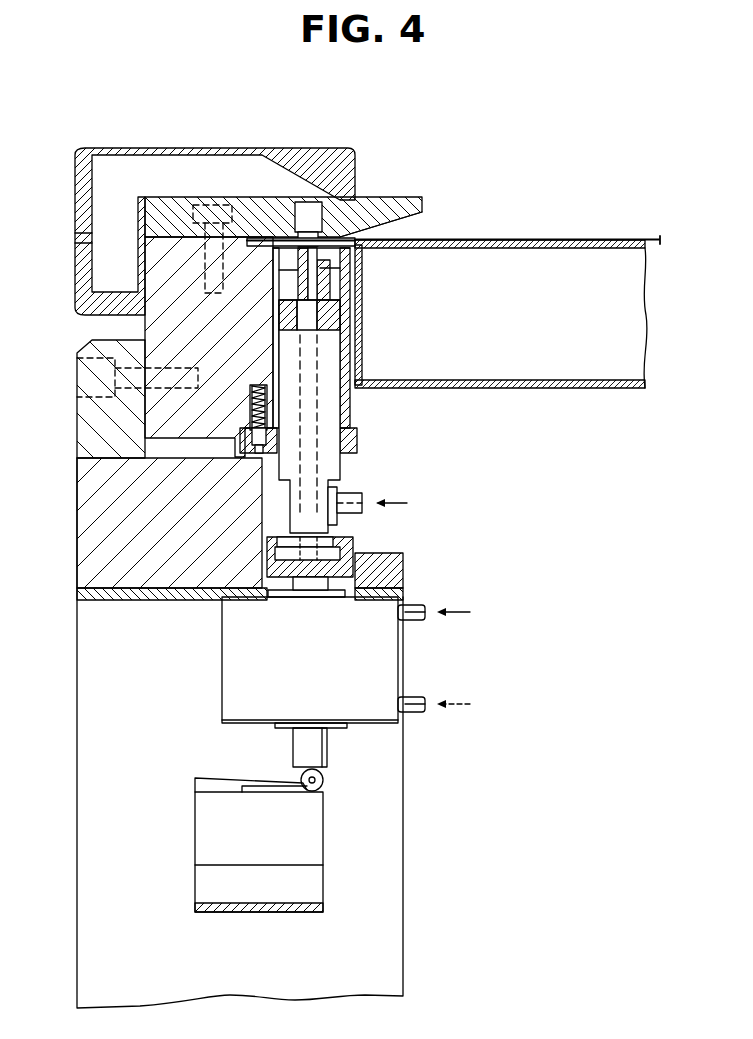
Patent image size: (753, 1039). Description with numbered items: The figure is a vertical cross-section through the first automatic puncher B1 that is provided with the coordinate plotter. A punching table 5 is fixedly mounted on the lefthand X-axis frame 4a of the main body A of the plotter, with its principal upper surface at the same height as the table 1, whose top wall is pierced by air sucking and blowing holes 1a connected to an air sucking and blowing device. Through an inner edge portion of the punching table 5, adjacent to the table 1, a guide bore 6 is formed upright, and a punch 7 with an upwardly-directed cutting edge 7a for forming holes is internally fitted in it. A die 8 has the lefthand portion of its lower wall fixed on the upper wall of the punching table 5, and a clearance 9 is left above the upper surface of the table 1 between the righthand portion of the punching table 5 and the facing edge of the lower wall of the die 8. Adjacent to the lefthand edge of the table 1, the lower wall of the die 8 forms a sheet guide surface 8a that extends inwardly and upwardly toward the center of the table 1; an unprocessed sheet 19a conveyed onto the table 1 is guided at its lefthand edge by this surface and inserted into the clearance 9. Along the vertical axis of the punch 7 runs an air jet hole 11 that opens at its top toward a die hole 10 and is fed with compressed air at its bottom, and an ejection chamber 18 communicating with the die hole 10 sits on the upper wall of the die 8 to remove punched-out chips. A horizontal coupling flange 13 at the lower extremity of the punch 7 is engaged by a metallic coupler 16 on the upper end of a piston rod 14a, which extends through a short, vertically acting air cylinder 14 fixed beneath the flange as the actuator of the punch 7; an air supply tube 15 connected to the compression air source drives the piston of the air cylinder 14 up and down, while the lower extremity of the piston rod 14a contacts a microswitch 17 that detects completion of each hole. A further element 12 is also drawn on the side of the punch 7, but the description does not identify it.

The first automatic puncher B1 is at (162, 110).
The ejection chamber 18 is at (235, 113).
The die 8 is at (395, 195).
The sheet guide surface 8a is at (416, 215).
The die hole 10 is at (310, 203).
The clearance 9 is at (257, 240).
The punching table 5 is at (147, 327).
The lefthand X-axis frame 4a is at (95, 511).
The guide bore 6 is at (337, 406).
The cutting edge 7a is at (313, 263).
The punch 7 is at (344, 464).
The air jet hole 11 is at (312, 328).
The adjusting screw 12 is at (355, 497).
The coupling flange 13 is at (333, 545).
The metallic coupler 16 is at (350, 542).
The table 1 is at (541, 388).
The air sucking and blowing holes 1a is at (565, 247).
The unprocessed sheet 19a is at (545, 240).
The air cylinder 14 is at (388, 728).
The air supply tube 15 is at (413, 623).
The piston rod 14a is at (330, 758).
The microswitch 17 is at (316, 845).
The main body A is at (410, 935).